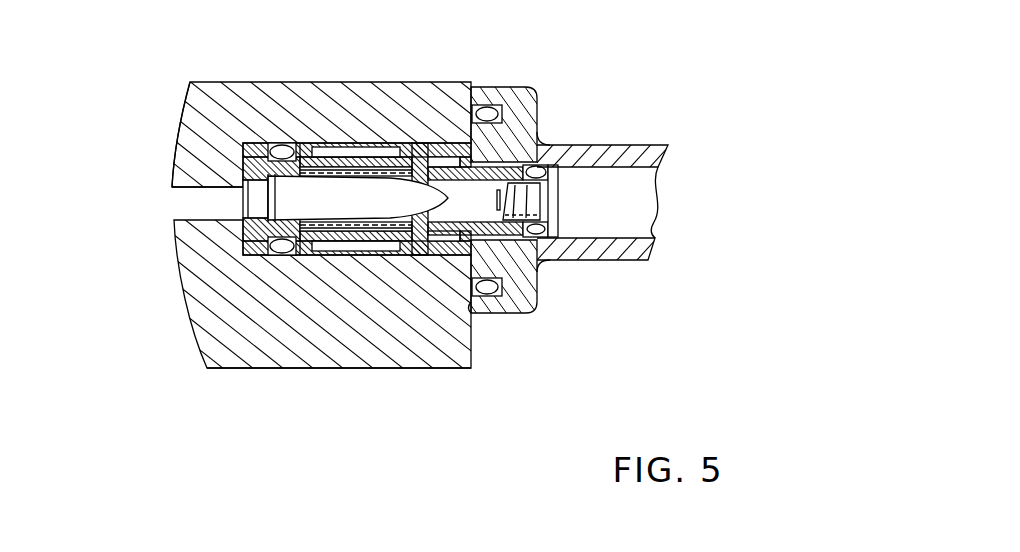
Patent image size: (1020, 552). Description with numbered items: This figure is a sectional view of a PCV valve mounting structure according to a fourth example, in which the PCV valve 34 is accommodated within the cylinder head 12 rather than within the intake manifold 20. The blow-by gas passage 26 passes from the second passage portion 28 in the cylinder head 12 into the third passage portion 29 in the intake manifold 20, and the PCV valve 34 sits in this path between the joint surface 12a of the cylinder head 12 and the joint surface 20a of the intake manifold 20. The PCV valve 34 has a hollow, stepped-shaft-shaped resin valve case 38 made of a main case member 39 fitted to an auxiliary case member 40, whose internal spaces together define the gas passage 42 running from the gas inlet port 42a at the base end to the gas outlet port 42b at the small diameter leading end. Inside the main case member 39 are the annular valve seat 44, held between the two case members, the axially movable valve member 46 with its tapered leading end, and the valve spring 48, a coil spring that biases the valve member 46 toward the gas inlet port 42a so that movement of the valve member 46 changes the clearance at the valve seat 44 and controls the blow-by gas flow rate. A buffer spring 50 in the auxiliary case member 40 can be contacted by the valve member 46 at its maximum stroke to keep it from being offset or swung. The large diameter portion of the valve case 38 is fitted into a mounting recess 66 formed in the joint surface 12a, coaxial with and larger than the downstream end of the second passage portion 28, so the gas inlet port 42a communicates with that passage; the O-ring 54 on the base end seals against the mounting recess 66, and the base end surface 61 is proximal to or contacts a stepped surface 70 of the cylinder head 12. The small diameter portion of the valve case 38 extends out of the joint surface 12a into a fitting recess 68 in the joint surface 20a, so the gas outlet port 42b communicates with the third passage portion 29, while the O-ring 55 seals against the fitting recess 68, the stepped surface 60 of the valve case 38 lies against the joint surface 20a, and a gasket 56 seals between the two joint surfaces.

The cylinder head 12 is at (212, 80).
The joint surface of the cylinder head 12a is at (471, 370).
The gas inlet port 42a is at (180, 127).
The blow-by gas passage 26 is at (168, 187).
The second passage portion 28 is at (180, 203).
The PCV valve 34 is at (335, 146).
The O-ring 54 is at (276, 143).
The stepped surface 70 is at (243, 254).
The base end surface 61 is at (242, 238).
The main case member 39 is at (338, 254).
The valve seat 44 is at (424, 148).
The valve spring 48 is at (373, 256).
The valve case 38 is at (412, 258).
The mounting recess 66 is at (334, 252).
The valve member 46 is at (293, 192).
The gas passage 42 is at (483, 197).
The gasket 56 is at (486, 112).
The stepped surface of the valve case 60 is at (497, 295).
The gas outlet port 42b is at (558, 204).
The auxiliary case member 40 is at (512, 228).
The O-ring 55 is at (540, 170).
The buffer spring 50 is at (553, 205).
The fitting recess 68 is at (490, 227).
The intake manifold 20 is at (609, 142).
The third passage portion 29 is at (644, 225).
The joint surface of the intake manifold 20a is at (472, 313).